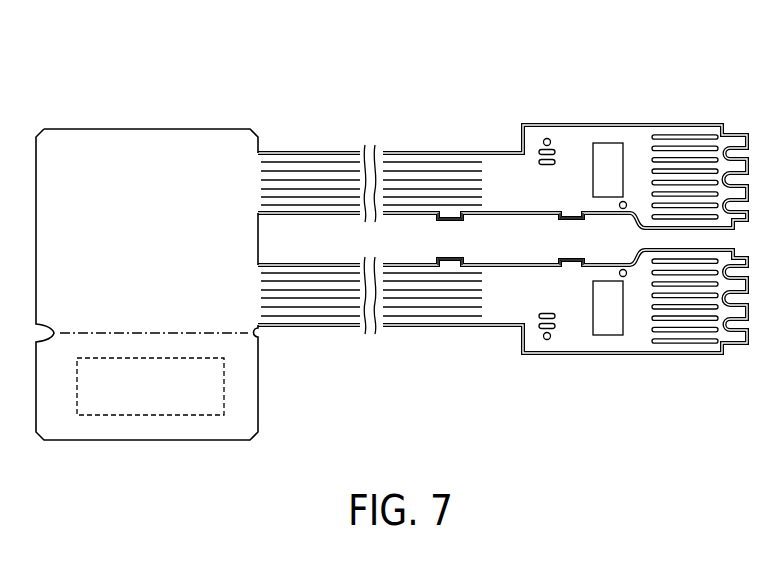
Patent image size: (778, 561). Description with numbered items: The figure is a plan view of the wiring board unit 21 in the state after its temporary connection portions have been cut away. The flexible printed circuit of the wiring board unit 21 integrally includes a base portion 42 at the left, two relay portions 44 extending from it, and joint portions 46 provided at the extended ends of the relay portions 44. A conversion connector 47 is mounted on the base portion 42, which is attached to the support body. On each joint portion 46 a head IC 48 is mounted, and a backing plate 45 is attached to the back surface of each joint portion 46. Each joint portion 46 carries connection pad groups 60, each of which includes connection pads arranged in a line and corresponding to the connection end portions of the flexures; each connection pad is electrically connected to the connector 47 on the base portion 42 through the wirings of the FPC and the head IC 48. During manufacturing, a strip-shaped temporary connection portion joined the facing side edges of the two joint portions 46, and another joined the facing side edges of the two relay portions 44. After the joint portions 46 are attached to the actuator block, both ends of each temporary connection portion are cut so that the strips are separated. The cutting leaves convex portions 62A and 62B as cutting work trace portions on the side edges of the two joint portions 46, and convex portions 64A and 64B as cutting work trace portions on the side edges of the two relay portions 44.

The wiring board unit 21 is at (308, 99).
The base portion 42 is at (143, 157).
The relay portions 44 is at (412, 176).
The backing plate 45 is at (560, 124).
The joint portion 46 is at (641, 148).
The conversion connector 47 is at (156, 405).
The head IC 48 is at (608, 152).
The connection pad groups 60 is at (699, 161).
The convex portion 62A is at (572, 216).
The convex portion 62B is at (578, 261).
The convex portion 64A is at (443, 216).
The convex portion 64B is at (462, 264).